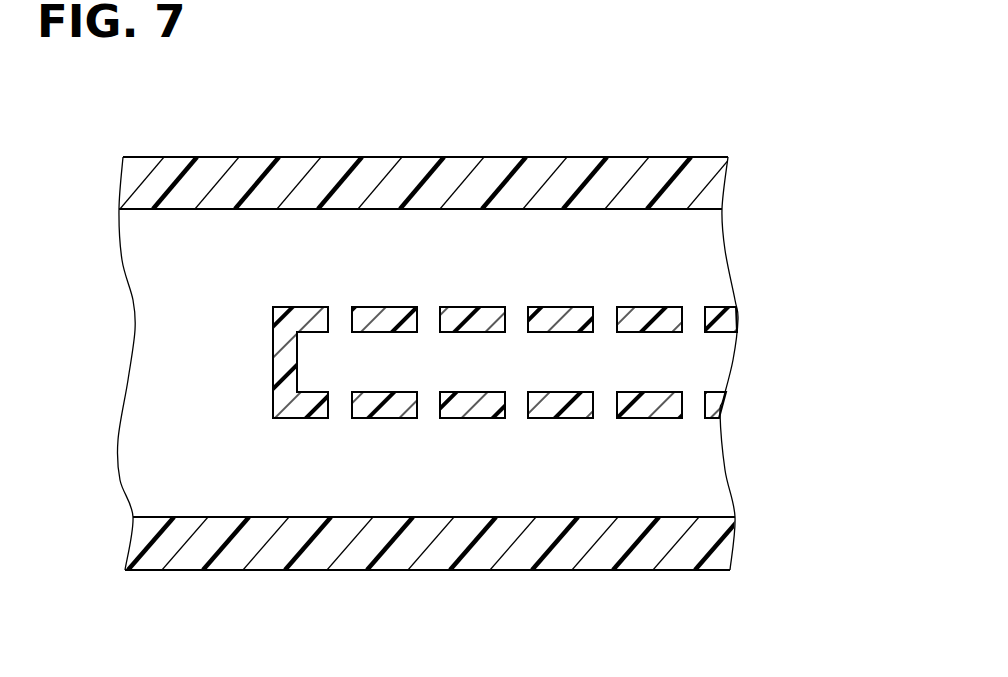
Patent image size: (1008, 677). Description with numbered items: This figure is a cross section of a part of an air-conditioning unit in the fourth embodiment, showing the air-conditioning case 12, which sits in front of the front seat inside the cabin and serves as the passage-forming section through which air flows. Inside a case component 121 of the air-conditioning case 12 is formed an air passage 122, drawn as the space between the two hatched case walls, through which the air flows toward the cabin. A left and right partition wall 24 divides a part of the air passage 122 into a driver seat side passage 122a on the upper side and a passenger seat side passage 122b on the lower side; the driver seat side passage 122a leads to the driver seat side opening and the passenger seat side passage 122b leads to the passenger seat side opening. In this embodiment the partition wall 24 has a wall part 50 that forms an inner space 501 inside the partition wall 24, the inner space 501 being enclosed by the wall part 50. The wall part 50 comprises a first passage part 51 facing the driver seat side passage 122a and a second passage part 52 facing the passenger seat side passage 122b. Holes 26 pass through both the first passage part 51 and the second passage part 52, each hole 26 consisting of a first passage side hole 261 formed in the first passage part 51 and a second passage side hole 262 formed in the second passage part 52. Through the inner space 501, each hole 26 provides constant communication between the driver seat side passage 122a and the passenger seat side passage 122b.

The air-conditioning case 12 is at (429, 319).
The case component 121 is at (144, 146).
The air passage 122 is at (253, 328).
The driver seat side passage 122a is at (380, 250).
The passenger seat side passage 122b is at (388, 472).
The left and right partition wall 24 is at (485, 303).
The wall part 50 is at (577, 307).
The first passage part 51 is at (662, 318).
The second passage part 52 is at (657, 407).
The holes 26 is at (781, 362).
The first passage side hole 261 is at (692, 319).
The second passage side hole 262 is at (695, 405).
The inner space 501 is at (657, 364).